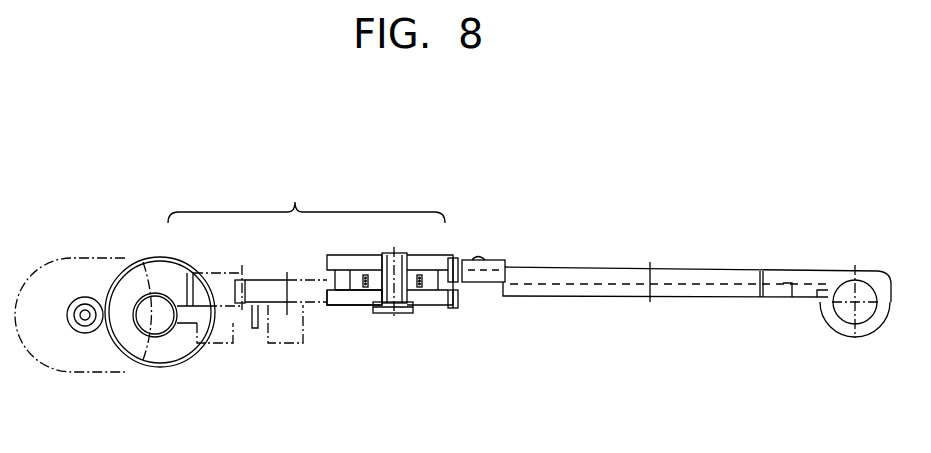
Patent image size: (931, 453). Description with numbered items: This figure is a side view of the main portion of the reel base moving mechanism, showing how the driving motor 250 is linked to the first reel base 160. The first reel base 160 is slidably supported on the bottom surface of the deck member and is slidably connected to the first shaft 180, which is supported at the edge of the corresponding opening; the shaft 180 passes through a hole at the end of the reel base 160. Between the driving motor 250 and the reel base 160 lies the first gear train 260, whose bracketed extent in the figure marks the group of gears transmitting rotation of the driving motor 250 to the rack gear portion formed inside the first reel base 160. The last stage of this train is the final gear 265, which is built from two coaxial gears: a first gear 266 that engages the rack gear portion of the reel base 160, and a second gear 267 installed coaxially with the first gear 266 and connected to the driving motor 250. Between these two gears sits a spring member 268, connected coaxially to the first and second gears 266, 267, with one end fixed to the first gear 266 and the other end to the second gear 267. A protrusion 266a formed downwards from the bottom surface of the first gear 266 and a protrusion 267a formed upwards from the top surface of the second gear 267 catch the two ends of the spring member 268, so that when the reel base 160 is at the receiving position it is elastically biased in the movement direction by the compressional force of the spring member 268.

The driving motor 250 is at (63, 258).
The first gear train 260 is at (306, 198).
The protrusion 266a is at (338, 270).
The final gear 265 is at (355, 317).
The protrusion 267a is at (363, 302).
The second gear 267 is at (442, 306).
The spring member 268 is at (422, 282).
The first gear 266 is at (452, 262).
The first reel base 160 is at (773, 272).
The first shaft 180 is at (860, 315).